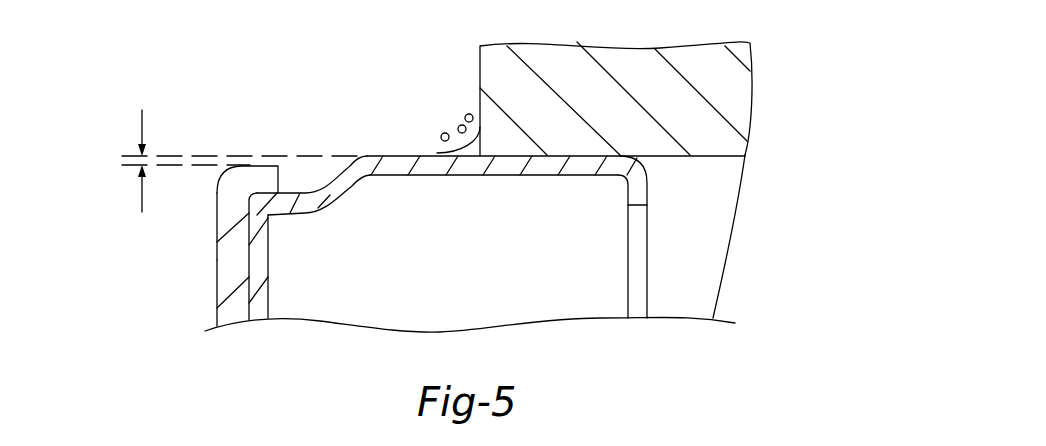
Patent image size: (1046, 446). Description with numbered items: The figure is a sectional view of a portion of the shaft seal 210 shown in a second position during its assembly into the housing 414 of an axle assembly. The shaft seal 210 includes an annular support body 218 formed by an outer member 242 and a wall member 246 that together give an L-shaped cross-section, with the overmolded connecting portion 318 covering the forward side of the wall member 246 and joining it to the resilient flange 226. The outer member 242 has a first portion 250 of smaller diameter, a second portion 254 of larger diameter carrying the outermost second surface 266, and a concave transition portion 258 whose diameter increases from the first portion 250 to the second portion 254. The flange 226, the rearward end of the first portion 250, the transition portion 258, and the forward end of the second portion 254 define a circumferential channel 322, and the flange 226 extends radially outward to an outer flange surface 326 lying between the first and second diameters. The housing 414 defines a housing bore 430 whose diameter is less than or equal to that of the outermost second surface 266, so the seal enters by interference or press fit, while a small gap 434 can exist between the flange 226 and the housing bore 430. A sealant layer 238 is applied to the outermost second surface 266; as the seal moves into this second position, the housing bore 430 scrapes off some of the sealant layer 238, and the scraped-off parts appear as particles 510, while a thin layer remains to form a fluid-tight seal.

The shaft seal 210 is at (682, 279).
The support body 218 is at (580, 163).
The flange 226 is at (243, 185).
The sealant layer 238 is at (433, 151).
The outer member 242 is at (395, 177).
The wall member 246 is at (258, 300).
The first portion 250 is at (252, 222).
The second portion 254 is at (460, 160).
The transition portion 258 is at (330, 195).
The outermost second surface 266 is at (517, 155).
The connecting portion 318 is at (227, 313).
The channel 322 is at (303, 190).
The outer flange surface 326 is at (251, 164).
The housing 414 is at (632, 70).
The housing bore 430 is at (703, 157).
The gap 434 is at (142, 110).
The particles 510 is at (462, 120).